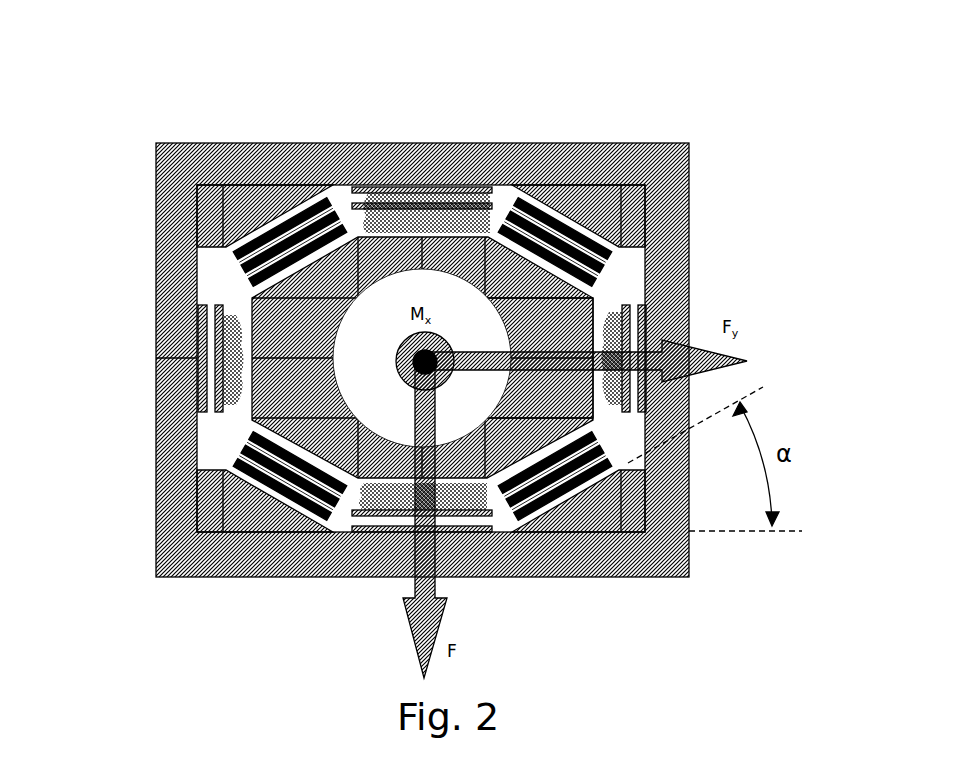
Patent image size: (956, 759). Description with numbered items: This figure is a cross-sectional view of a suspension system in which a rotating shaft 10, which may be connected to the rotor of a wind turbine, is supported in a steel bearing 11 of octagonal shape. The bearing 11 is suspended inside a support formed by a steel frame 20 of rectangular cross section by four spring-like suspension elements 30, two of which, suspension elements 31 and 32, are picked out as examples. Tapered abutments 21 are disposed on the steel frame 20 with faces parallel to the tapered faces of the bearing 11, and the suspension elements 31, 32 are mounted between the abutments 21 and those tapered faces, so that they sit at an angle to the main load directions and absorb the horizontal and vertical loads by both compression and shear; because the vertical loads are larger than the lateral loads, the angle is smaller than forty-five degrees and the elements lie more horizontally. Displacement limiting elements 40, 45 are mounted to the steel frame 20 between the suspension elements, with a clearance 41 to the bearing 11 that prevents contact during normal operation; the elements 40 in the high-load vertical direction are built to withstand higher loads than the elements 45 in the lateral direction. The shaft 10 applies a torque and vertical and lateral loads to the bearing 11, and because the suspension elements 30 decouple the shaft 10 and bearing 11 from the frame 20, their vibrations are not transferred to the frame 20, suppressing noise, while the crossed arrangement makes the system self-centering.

The rotating shaft 10 is at (484, 268).
The steel bearing 11 is at (558, 317).
The steel frame 20 is at (183, 228).
The tapered abutment 21 is at (265, 512).
The suspension element 30 is at (285, 213).
The suspension element 31 is at (302, 515).
The suspension element 32 is at (573, 498).
The displacement limiting element 40 is at (408, 178).
The clearance 41 is at (450, 224).
The displacement limiting element 45 is at (237, 350).